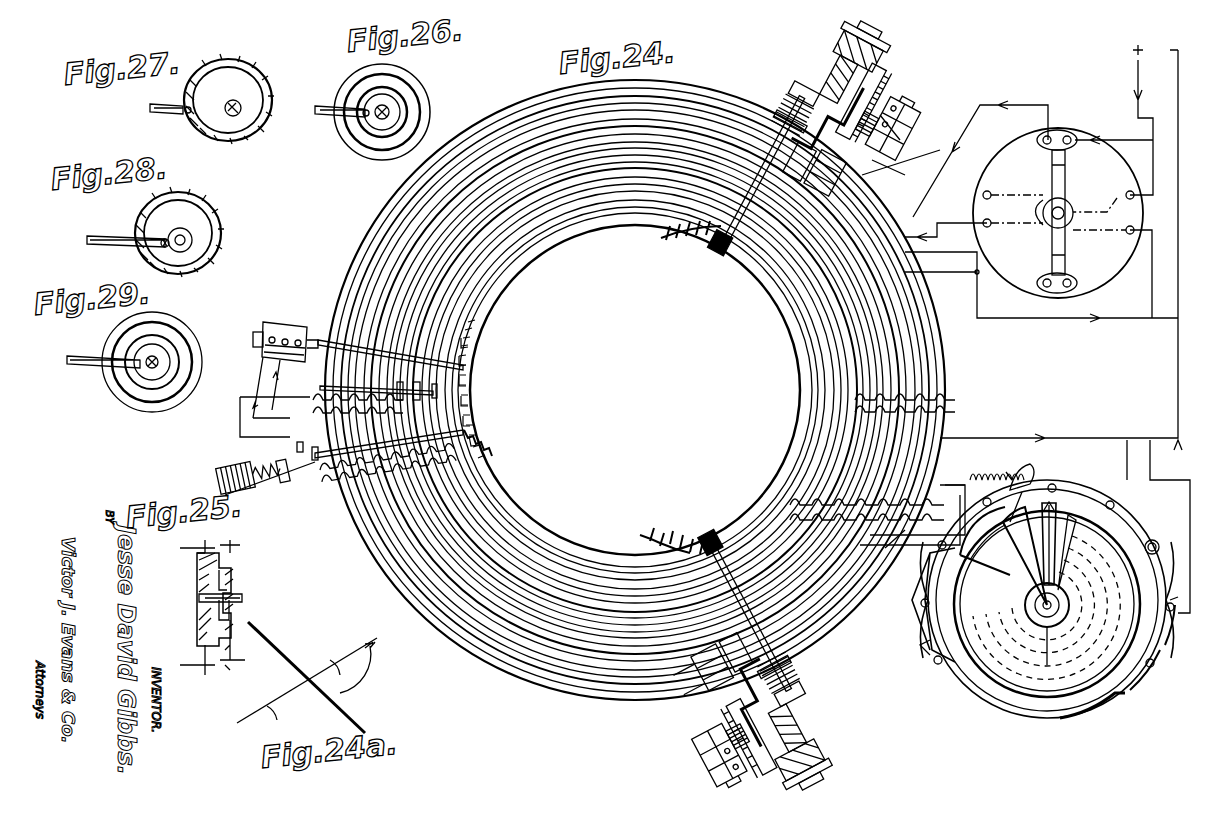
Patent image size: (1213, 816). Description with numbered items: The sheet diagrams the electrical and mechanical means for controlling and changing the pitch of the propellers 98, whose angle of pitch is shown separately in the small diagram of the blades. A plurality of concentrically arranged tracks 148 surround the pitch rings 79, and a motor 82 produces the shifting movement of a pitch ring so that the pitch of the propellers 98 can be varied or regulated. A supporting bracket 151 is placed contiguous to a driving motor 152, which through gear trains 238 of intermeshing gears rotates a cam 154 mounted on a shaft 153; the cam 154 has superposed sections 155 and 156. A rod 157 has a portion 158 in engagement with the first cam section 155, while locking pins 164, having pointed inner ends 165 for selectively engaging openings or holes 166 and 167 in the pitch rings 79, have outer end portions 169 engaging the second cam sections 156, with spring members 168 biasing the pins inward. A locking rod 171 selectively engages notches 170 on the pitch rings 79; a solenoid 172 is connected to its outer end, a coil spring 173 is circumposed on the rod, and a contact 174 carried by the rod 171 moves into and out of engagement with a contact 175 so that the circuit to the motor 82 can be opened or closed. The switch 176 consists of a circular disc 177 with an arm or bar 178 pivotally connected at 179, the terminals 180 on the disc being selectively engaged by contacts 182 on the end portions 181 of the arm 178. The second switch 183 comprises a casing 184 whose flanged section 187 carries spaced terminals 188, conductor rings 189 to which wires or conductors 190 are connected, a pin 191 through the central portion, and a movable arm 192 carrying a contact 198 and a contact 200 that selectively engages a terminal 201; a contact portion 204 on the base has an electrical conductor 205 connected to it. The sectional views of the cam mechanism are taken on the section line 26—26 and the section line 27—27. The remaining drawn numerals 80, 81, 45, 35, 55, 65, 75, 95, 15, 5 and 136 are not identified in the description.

In FIG. 24, the tracks 148 is at (798, 342).
In FIG. 24, the pitch rings 79 is at (558, 240).
In FIG. 24, the gear teeth 80 is at (473, 335).
In FIG. 24, the ratchet teeth 81 is at (469, 356).
In FIG. 24, the motor 82 is at (288, 331).
In FIG. 24, the locking pins 164 is at (800, 122).
In FIG. 28, the locking pins 164 is at (108, 246).
In FIG. 24, the pointed inner ends 165 is at (701, 262).
In FIG. 24, the openings or holes 166 is at (712, 254).
In FIG. 24, the openings or holes 167 is at (750, 492).
In FIG. 24, the spring members 168 is at (797, 94).
In FIG. 24, the outer end portions 169 is at (820, 72).
In FIG. 28, the outer end portions 169 is at (158, 239).
In FIG. 24, the notches 170 is at (482, 373).
In FIG. 24, the locking rod 171 is at (340, 473).
In FIG. 24, the solenoid 172 is at (215, 470).
In FIG. 24, the coil spring 173 is at (316, 463).
In FIG. 24, the contact 174 is at (288, 471).
In FIG. 24, the contact 175 is at (285, 435).
In FIG. 24, the switch 176 is at (1101, 290).
In FIG. 24, the circular disc 177 is at (1021, 272).
In FIG. 24, the arm or bar 178 is at (1066, 248).
In FIG. 24, the pivot 179 is at (1050, 226).
In FIG. 24, the terminals 180 is at (1058, 207).
In FIG. 24, the end portions 181 is at (1066, 134).
In FIG. 24, the contacts 182 is at (1063, 130).
In FIG. 24, the second switch 183 is at (1080, 725).
In FIG. 24, the casing 184 is at (984, 706).
In FIG. 24, the flanged section 187 is at (1150, 544).
In FIG. 24, the terminals 188 is at (1181, 631).
In FIG. 24, the conductor rings 189 is at (1164, 532).
In FIG. 24, the wires or conductors 190 is at (992, 685).
In FIG. 24, the securing element or pin 191 is at (1047, 654).
In FIG. 24, the movable arm 192 is at (1070, 526).
In FIG. 24, the contact 198 is at (1060, 501).
In FIG. 24, the contact 200 is at (1029, 528).
In FIG. 24, the terminal 201 is at (1023, 547).
In FIG. 24, the contact portion 204 is at (1028, 480).
In FIG. 24, the electrical conductor 205 is at (997, 462).
In FIG. 24, the screw 45 is at (1053, 475).
In FIG. 24, the wire 35 is at (966, 487).
In FIG. 24, the screw 55 is at (1115, 493).
In FIG. 24, the bolts 65 is at (1049, 582).
In FIG. 24, the tab 75 is at (1181, 596).
In FIG. 24, the flange 95 is at (1153, 670).
In FIG. 24, the section line 26— 26 is at (907, 539).
In FIG. 25, the section line 26— 26 is at (235, 603).
In FIG. 25, the section line 27— 27 is at (196, 611).
In FIG. 24, the housing 15 is at (924, 605).
In FIG. 24, the base 5 is at (922, 658).
In FIG. 24, the face ring 136 is at (1038, 716).
In FIG. 24, the driving motor 152 is at (915, 122).
In FIG. 24, the shaft 153 is at (866, 105).
In FIG. 27, the shaft 153 is at (243, 110).
In FIG. 26, the shaft 153 is at (386, 110).
In FIG. 28, the shaft 153 is at (189, 248).
In FIG. 29, the shaft 153 is at (157, 359).
In FIG. 25, the shaft 153 is at (235, 596).
In FIG. 24, the cam 154 is at (850, 45).
In FIG. 27, the cam 154 is at (277, 74).
In FIG. 26, the cam 154 is at (346, 73).
In FIG. 28, the cam 154 is at (190, 276).
In FIG. 29, the cam 154 is at (186, 316).
In FIG. 25, the cam 154 is at (192, 607).
In FIG. 24, the first cam section 155 is at (872, 72).
In FIG. 26, the first cam section 155 is at (384, 120).
In FIG. 29, the first cam section 155 is at (150, 389).
In FIG. 25, the first cam section 155 is at (228, 604).
In FIG. 24, the second cam section 156 is at (854, 60).
In FIG. 25, the second cam section 156 is at (202, 616).
In FIG. 24, the rod 157 is at (769, 696).
In FIG. 29, the rod 157 is at (87, 370).
In FIG. 24, the portion 158 is at (902, 135).
In FIG. 29, the portion 158 is at (135, 374).
In FIG. 26, the supporting bracket 151 is at (312, 104).
In FIG. 24, the gear trains 238 is at (815, 88).
In FIG. 24A, the propellers 98 is at (291, 653).